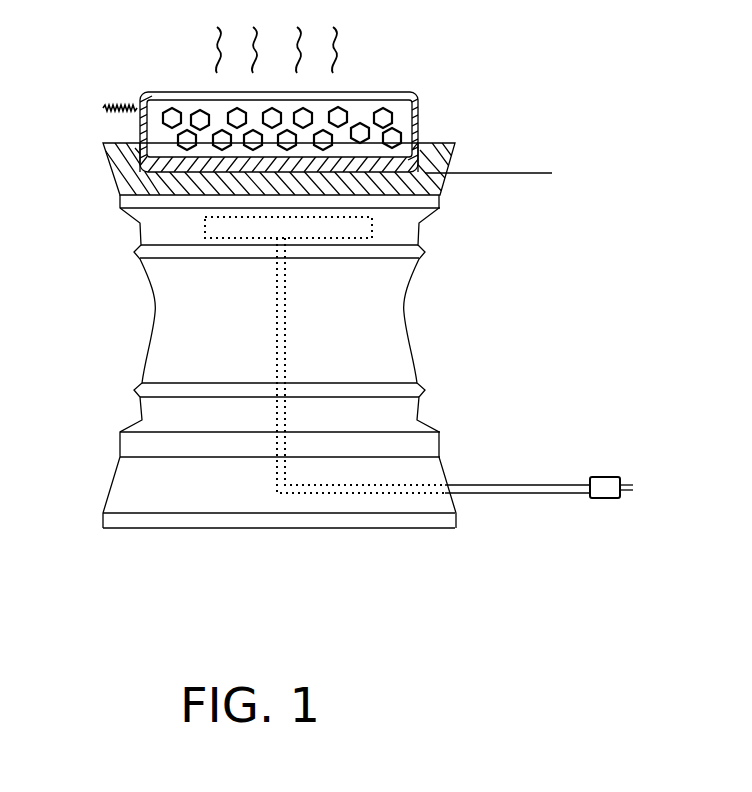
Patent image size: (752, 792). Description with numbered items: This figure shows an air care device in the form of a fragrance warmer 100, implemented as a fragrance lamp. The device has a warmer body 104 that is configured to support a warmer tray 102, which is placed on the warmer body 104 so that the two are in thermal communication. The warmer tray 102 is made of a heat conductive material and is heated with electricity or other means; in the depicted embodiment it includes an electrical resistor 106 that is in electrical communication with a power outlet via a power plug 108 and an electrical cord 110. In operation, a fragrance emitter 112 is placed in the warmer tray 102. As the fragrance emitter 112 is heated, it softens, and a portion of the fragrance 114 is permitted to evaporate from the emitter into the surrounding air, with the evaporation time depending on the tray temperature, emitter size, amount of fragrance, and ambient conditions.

The fragrance warmer 100 is at (128, 78).
The warmer tray 102 is at (253, 165).
The warmer body 104 is at (395, 302).
The electrical resistor 106 is at (350, 222).
The power plug 108 is at (285, 325).
The electrical cord 110 is at (603, 483).
The fragrance emitter 112 is at (383, 118).
The fragrance 114 is at (350, 42).